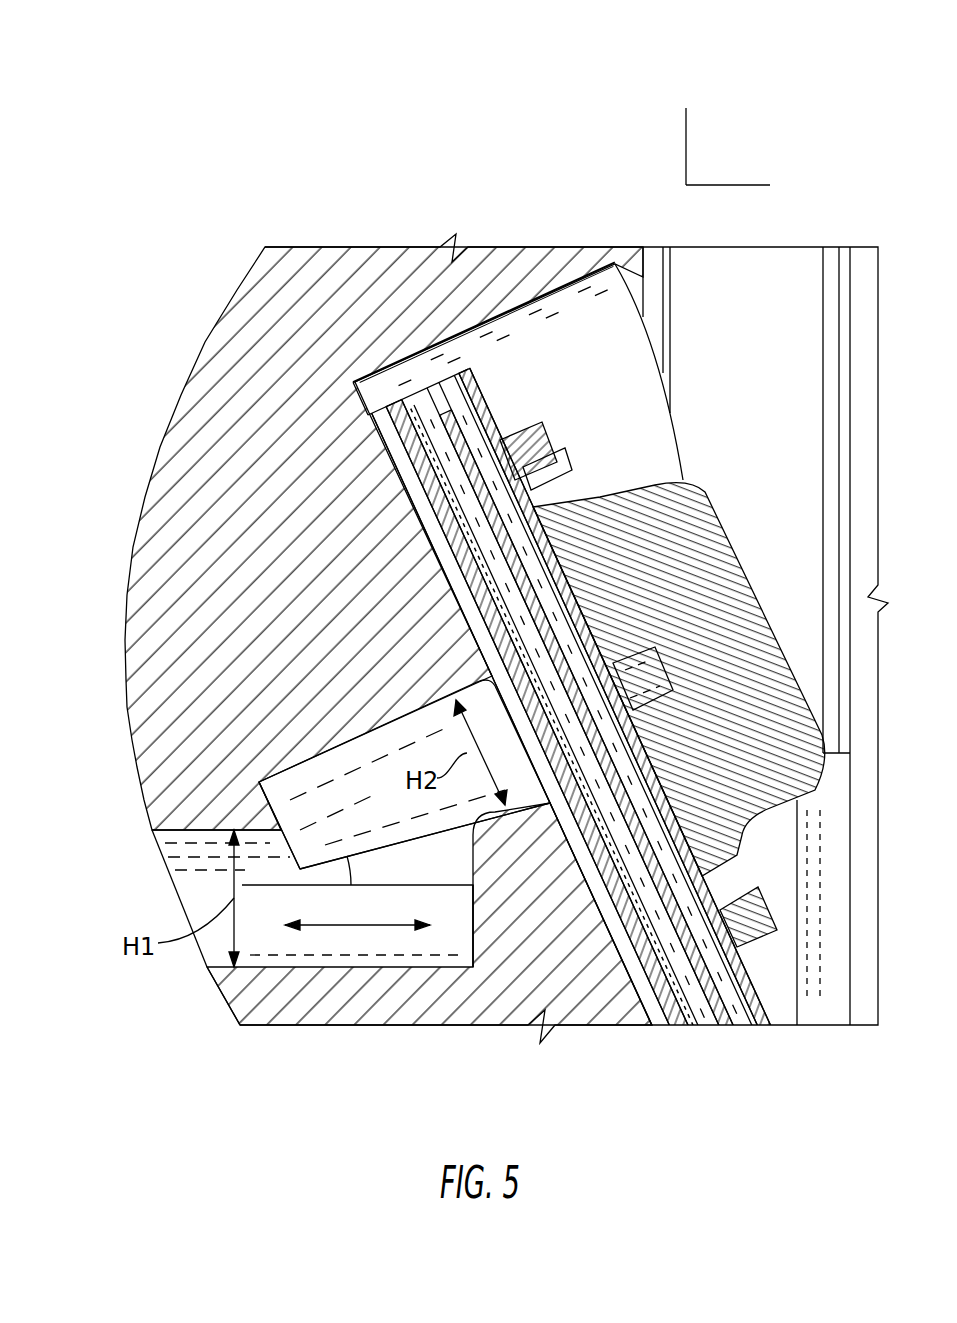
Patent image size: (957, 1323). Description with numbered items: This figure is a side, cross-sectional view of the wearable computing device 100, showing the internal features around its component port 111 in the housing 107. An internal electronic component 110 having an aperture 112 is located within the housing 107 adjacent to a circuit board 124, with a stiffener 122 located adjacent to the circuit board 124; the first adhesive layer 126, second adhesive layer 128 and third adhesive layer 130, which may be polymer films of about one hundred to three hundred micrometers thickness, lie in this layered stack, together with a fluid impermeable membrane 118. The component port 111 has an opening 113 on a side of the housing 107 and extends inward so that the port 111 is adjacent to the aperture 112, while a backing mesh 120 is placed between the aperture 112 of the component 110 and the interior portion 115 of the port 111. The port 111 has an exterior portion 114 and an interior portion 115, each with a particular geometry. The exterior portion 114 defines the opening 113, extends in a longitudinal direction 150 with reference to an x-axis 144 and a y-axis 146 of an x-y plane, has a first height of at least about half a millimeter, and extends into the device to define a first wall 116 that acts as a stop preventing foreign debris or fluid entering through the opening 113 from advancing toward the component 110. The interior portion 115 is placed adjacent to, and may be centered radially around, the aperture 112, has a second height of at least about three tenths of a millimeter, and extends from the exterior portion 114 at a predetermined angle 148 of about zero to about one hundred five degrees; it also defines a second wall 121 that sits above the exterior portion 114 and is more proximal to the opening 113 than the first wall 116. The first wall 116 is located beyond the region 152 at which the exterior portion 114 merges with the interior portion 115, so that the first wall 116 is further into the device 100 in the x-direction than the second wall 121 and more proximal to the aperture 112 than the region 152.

The wearable computing device 100 is at (124, 100).
The housing 107 is at (88, 437).
The internal electronic component 110 is at (720, 572).
The component port 111 is at (215, 975).
The aperture 112 is at (653, 678).
The opening 113 is at (172, 862).
The exterior portion 114 is at (292, 945).
The interior portion 115 is at (412, 753).
The first wall 116 is at (467, 923).
The fluid impermeable membrane 118 is at (600, 880).
The backing mesh 120 is at (395, 413).
The second wall 121 is at (258, 792).
The stiffener 122 is at (453, 433).
The circuit board 124 is at (480, 420).
The first adhesive layer 126 is at (652, 1002).
The second adhesive layer 128 is at (678, 1025).
The third adhesive layer 130 is at (708, 1022).
The x-axis 144 is at (798, 186).
The y-axis 146 is at (700, 90).
The predetermined angle 148 is at (352, 845).
The longitudinal direction 150 is at (360, 925).
The region 152 is at (272, 828).